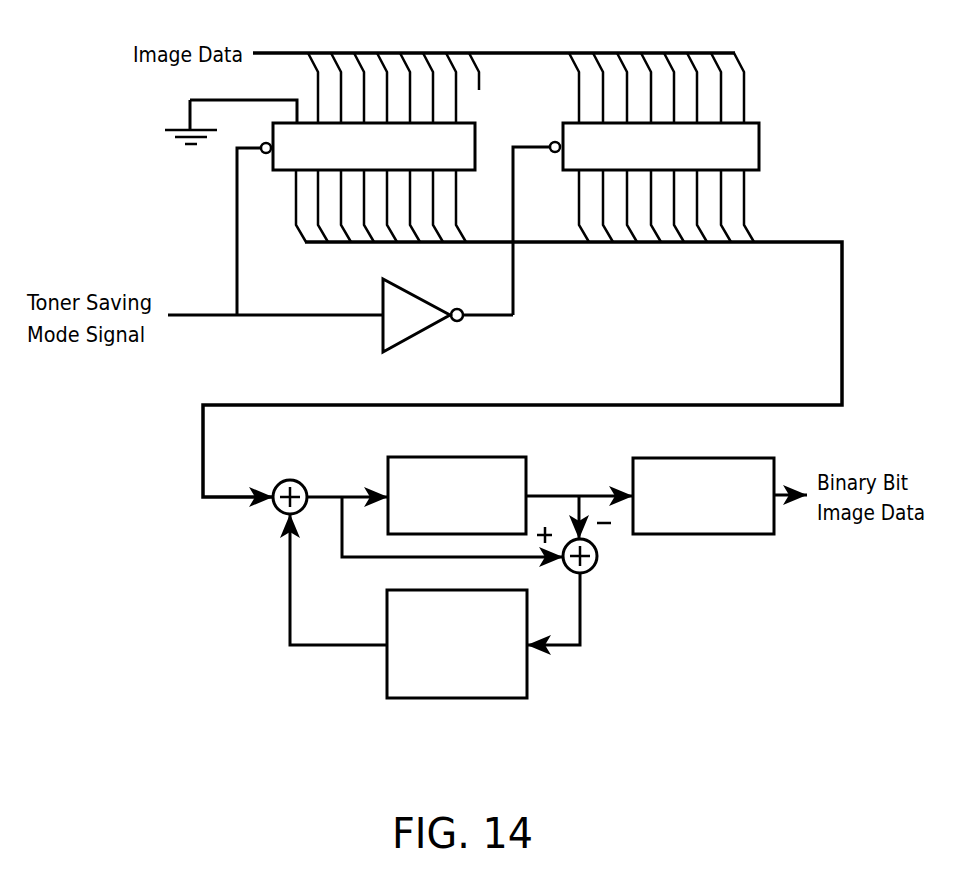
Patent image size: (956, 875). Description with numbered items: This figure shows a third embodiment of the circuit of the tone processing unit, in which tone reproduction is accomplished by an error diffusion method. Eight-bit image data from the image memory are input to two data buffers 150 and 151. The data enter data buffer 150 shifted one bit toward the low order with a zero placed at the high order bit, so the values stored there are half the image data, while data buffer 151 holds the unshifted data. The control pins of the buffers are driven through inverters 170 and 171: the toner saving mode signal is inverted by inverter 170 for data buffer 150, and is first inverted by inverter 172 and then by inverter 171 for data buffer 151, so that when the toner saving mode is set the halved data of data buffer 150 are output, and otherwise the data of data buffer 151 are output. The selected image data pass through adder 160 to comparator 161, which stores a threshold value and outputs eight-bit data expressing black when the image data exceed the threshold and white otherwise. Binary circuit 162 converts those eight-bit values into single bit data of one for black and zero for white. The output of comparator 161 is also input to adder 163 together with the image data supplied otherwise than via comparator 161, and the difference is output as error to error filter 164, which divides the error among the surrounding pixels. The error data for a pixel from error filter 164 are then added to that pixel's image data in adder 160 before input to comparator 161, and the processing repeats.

The data buffer 150 is at (475, 145).
The data buffer 151 is at (759, 147).
The adder 160 is at (303, 481).
The comparator 161 is at (508, 457).
The binary circuit 162 is at (703, 534).
The adder 163 is at (597, 565).
The error filter 164 is at (457, 698).
The inverter 170 is at (262, 158).
The inverter 171 is at (553, 157).
The inverter 172 is at (422, 330).